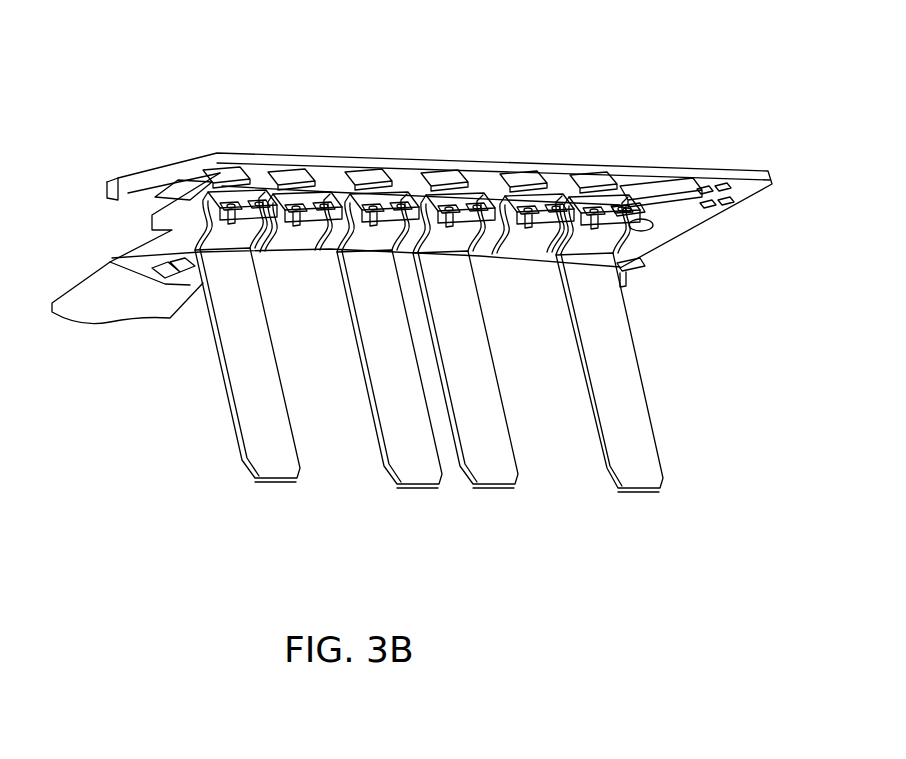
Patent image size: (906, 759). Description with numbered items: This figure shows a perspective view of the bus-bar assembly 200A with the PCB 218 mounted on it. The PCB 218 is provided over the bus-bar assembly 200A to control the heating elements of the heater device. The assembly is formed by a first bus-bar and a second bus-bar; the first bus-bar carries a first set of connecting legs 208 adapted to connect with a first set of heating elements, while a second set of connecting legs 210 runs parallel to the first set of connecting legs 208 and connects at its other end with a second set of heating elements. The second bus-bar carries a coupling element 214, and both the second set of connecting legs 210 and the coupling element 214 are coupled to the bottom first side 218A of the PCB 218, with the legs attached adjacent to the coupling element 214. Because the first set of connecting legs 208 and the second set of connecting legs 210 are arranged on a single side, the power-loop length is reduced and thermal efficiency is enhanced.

The bus-bar assembly 200A is at (218, 472).
The first set of connecting legs 208 is at (333, 427).
The second set of connecting legs 210 is at (228, 250).
The coupling element 214 is at (303, 217).
The PCB 218 is at (425, 173).
The bottom first side of the PCB 218A is at (652, 167).